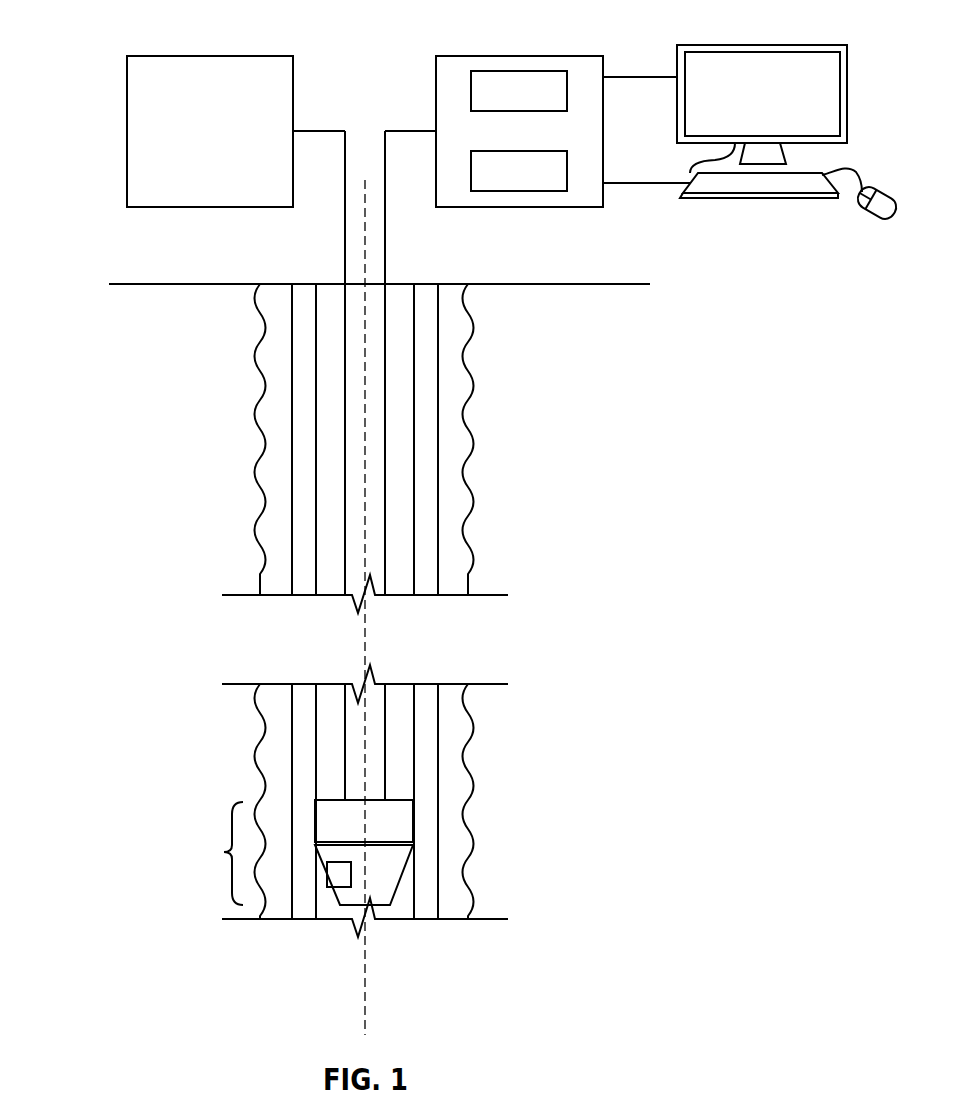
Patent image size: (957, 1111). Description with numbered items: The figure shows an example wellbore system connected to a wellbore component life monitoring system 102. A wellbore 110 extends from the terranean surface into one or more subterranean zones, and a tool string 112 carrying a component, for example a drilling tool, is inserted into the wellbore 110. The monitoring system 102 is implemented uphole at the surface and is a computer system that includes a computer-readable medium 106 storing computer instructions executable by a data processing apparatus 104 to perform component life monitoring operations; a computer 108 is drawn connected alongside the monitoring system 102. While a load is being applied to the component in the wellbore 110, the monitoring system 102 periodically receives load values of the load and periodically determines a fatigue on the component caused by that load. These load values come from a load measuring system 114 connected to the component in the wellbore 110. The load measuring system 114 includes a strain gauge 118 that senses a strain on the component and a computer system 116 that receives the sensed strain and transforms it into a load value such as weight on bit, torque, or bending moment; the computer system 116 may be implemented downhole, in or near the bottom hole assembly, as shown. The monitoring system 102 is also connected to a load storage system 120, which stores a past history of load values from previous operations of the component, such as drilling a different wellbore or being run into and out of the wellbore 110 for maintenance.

The wellbore component life monitoring system 102 is at (508, 56).
The data processing apparatus 104 is at (523, 71).
The computer-readable medium 106 is at (520, 191).
The computer / user interface 108 is at (748, 45).
The wellbore 110 is at (436, 428).
The tool string 112 is at (415, 393).
The load measuring system 114 is at (210, 853).
The computer system 116 is at (403, 825).
The strain gauge 118 is at (351, 875).
The load storage system 120 is at (200, 56).